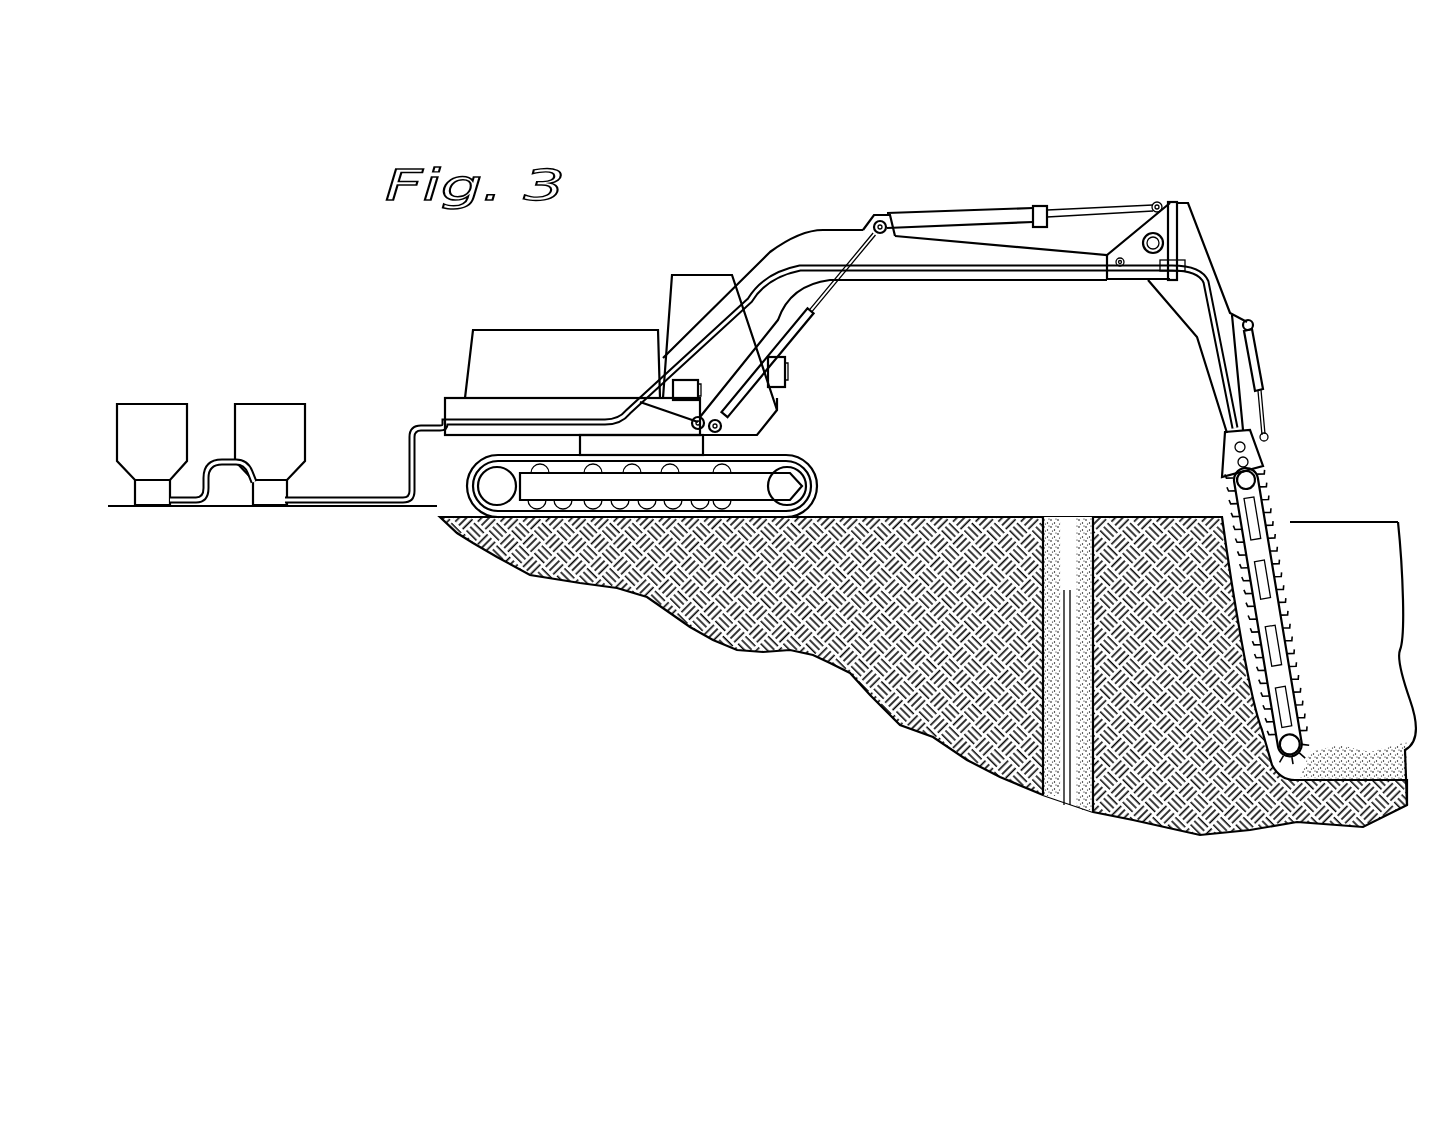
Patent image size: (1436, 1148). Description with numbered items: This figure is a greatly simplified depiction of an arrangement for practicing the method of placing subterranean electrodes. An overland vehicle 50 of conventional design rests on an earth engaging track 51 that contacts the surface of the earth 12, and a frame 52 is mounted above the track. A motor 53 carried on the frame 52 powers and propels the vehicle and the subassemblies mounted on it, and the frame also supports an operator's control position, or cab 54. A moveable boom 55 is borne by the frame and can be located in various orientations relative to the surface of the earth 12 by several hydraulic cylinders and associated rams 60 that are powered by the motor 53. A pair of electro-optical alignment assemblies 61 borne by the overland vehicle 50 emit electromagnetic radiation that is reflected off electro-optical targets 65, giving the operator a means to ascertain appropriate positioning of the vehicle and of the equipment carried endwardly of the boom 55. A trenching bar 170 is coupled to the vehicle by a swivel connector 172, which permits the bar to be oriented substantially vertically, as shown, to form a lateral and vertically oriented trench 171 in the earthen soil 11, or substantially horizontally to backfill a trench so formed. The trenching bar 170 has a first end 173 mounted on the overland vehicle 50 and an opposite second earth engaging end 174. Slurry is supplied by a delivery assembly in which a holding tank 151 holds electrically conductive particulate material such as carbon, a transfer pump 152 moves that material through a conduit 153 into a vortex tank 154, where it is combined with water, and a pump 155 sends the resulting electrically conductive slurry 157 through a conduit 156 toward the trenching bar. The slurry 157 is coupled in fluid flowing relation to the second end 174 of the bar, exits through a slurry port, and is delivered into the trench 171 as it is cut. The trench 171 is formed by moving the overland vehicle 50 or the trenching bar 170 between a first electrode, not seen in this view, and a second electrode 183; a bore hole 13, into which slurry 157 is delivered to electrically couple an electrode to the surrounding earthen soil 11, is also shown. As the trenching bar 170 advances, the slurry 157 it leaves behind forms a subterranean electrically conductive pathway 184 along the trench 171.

The earthen soil 11 is at (927, 625).
The surface of the earth 12 is at (930, 515).
The bore hole 13 is at (1174, 655).
The overland vehicle 50 is at (845, 458).
The earth engaging track 51 is at (800, 466).
The frame 52 is at (450, 410).
The motor 53 is at (510, 345).
The cab 54 is at (697, 280).
The moveable boom 55 is at (810, 237).
The hydraulic cylinders and associated rams 60 is at (958, 218).
The electro-optical alignment assemblies 61 is at (788, 380).
The electro-optical targets 65 is at (1215, 440).
The holding tank 151 is at (150, 410).
The transfer pump 152 is at (150, 495).
The conduit 153 is at (215, 483).
The vortex tank 154 is at (270, 418).
The pump 155 is at (270, 500).
The conduit 156 is at (402, 466).
The electrically conductive slurry 157 is at (1042, 520).
The trenching bar 170 is at (1292, 606).
The trench 171 is at (1355, 672).
The swivel connector 172 is at (1258, 450).
The first end 173 is at (1215, 470).
The second earth engaging end 174 is at (1288, 790).
The second electrode 183 is at (1043, 737).
The subterranean electrically conductive pathway 184 is at (1405, 805).